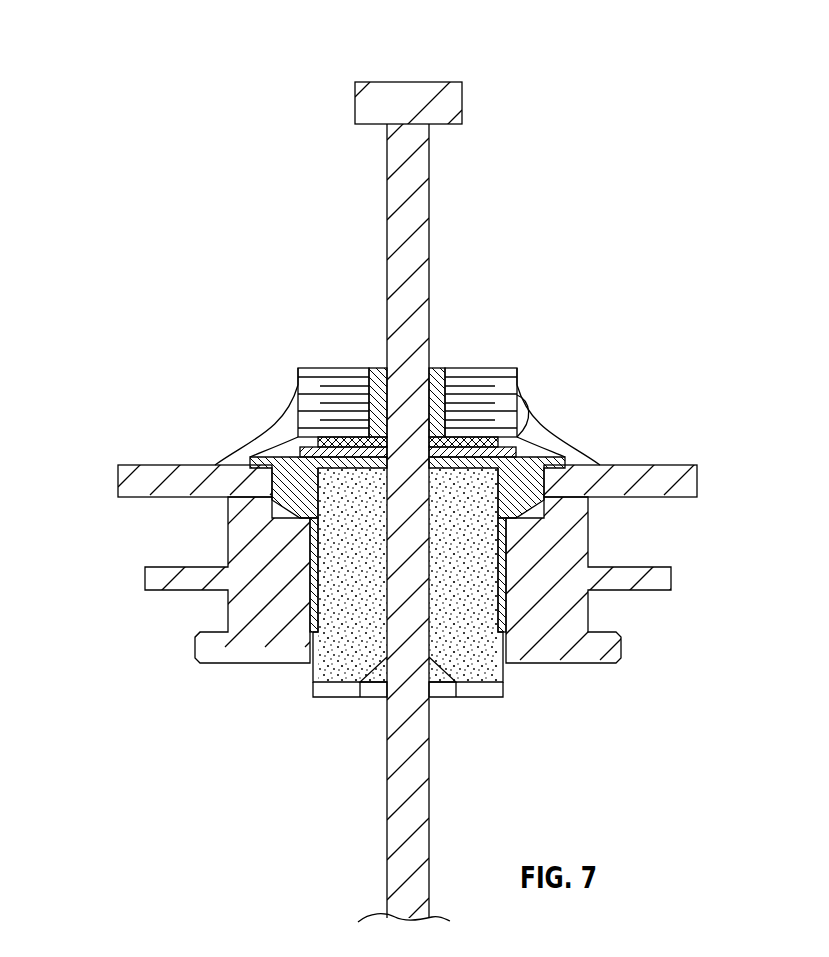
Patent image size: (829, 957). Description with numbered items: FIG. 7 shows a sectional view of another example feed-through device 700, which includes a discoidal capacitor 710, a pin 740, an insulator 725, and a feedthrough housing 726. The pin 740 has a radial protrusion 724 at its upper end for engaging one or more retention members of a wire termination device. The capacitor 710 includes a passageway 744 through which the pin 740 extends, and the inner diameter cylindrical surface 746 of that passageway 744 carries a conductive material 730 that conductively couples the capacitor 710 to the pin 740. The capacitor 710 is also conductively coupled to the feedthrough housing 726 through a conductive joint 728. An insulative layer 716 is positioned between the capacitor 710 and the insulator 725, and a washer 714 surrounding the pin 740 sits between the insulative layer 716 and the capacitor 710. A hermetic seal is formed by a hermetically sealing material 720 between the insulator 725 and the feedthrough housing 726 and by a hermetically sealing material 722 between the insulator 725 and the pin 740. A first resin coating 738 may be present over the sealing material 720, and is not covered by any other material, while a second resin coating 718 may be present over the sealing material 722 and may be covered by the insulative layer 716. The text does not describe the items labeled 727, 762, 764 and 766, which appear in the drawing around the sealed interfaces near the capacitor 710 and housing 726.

The feed-through device 700 is at (644, 62).
The discoidal capacitor 710 is at (335, 368).
The washer 714 is at (350, 440).
The insulative layer 716 is at (293, 423).
The second resin coating 718 is at (505, 400).
The hermetically sealing material 720 is at (228, 587).
The hermetically sealing material 722 is at (433, 490).
The radial protrusion 724 is at (462, 93).
The insulator 725 is at (340, 694).
The feedthrough housing 726 is at (672, 582).
The insulator assembly 727 is at (120, 450).
The conductive joint 728 is at (573, 462).
The conductive material 730 is at (470, 368).
The first resin coating 738 is at (275, 492).
The pin 740 is at (429, 178).
The passageway 744 is at (372, 368).
The inner diameter cylindrical surface 746 is at (434, 368).
The seal layer 762 is at (470, 445).
The seal layer 764 is at (495, 458).
The insulating washer 766 is at (520, 495).